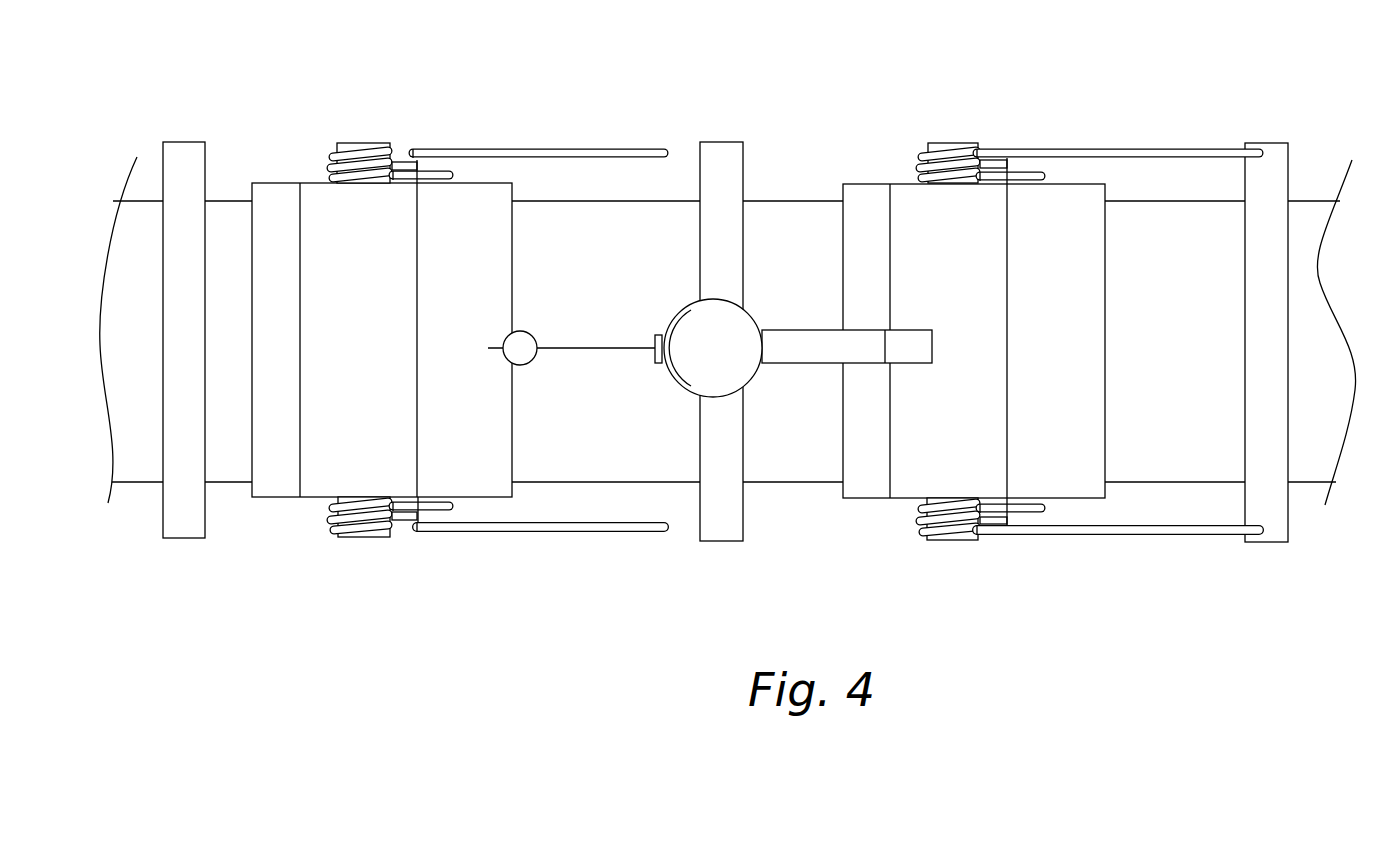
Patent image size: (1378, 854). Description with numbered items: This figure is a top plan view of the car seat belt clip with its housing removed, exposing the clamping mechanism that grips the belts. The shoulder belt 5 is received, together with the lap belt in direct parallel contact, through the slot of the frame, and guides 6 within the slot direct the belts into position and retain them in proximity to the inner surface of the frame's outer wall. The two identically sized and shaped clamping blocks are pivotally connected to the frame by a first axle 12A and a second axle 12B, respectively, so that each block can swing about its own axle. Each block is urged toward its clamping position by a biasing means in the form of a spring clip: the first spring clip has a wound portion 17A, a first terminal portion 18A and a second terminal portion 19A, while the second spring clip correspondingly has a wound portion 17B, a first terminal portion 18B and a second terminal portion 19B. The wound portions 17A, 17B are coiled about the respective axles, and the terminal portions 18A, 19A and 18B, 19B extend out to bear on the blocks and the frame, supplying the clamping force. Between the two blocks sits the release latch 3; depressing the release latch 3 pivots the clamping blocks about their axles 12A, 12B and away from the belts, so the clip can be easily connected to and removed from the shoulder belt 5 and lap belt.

The release latch 3 is at (730, 340).
The shoulder belt 5 is at (1305, 202).
The guides 6 is at (185, 142).
The first axle 12A is at (958, 538).
The second axle 12B is at (368, 538).
The wound portion 17A is at (925, 160).
The wound portion 17B is at (333, 160).
The first terminal portion 18A is at (1026, 166).
The first terminal portion 18B is at (425, 158).
The second terminal portion 19A is at (1068, 148).
The second terminal portion 19B is at (458, 148).